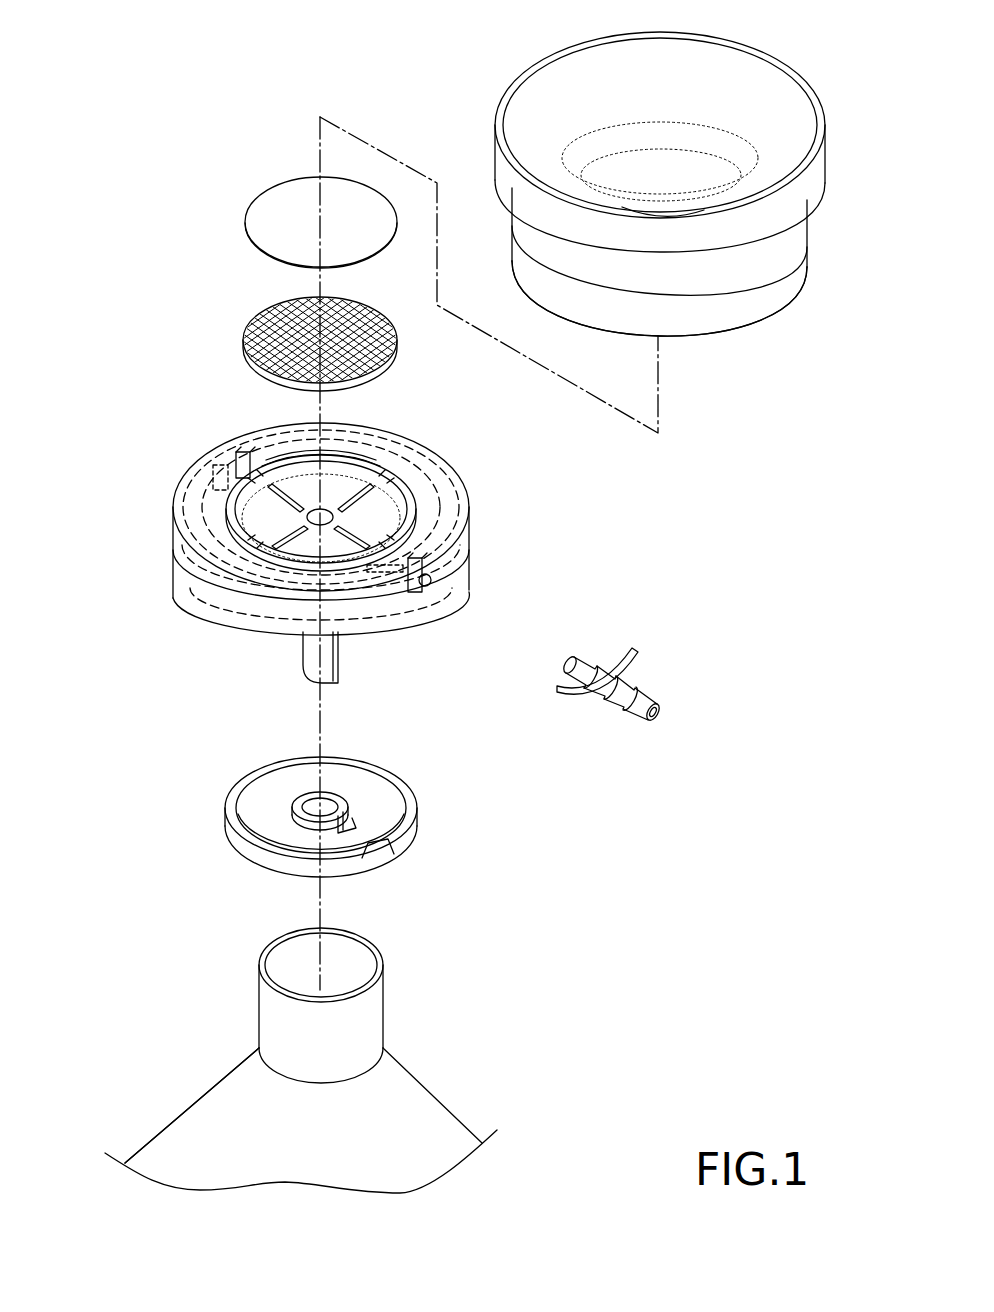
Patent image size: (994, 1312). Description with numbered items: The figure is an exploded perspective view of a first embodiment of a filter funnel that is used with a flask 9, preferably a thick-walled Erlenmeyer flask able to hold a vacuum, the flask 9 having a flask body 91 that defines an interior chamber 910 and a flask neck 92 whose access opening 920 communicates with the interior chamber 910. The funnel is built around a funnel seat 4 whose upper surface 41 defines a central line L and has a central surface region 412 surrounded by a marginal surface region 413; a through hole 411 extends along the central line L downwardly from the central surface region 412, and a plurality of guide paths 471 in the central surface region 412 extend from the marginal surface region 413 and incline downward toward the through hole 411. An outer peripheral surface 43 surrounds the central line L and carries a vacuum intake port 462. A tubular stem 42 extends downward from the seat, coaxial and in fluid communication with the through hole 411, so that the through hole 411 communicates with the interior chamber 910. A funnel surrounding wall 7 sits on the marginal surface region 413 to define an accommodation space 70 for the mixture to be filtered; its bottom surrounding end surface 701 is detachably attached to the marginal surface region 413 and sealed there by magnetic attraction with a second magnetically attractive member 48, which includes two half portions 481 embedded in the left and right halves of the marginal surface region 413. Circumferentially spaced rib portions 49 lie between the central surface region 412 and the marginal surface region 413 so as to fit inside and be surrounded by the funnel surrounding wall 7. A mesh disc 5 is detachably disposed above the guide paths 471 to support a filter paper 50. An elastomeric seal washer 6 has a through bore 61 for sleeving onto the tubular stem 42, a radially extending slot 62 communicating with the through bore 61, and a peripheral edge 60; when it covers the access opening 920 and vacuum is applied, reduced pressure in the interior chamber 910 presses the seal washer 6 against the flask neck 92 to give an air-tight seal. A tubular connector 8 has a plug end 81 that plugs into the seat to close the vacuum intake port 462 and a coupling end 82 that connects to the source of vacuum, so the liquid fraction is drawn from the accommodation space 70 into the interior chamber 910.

The central line L is at (318, 122).
The filter paper 50 is at (268, 200).
The mesh disc 5 is at (231, 308).
The funnel surrounding wall 7 is at (621, 215).
The accommodation space 70 is at (637, 180).
The bottom surrounding end surface 701 is at (703, 334).
The funnel seat 4 is at (323, 542).
The outer peripheral surface 43 is at (463, 545).
The rib portions 49 is at (227, 533).
The guide paths 471 is at (343, 480).
The upper surface 41 is at (394, 605).
The central surface region 412 is at (327, 537).
The marginal surface region 413 is at (367, 565).
The through hole 411 is at (313, 513).
The second magnetically attractive member 48 is at (170, 445).
The half portions 481 is at (242, 440).
The vacuum intake port 462 is at (428, 582).
The tubular stem 42 is at (303, 650).
The tubular connector 8 is at (654, 647).
The plug end 81 is at (580, 667).
The coupling end 82 is at (643, 700).
The seal washer 6 is at (373, 787).
The peripheral edge 60 is at (403, 843).
The through bore 61 is at (310, 803).
The slot 62 is at (338, 800).
The flask 9 is at (309, 1041).
The flask neck 92 is at (377, 998).
The access opening 920 is at (350, 947).
The flask body 91 is at (433, 1102).
The interior chamber 910 is at (247, 1112).